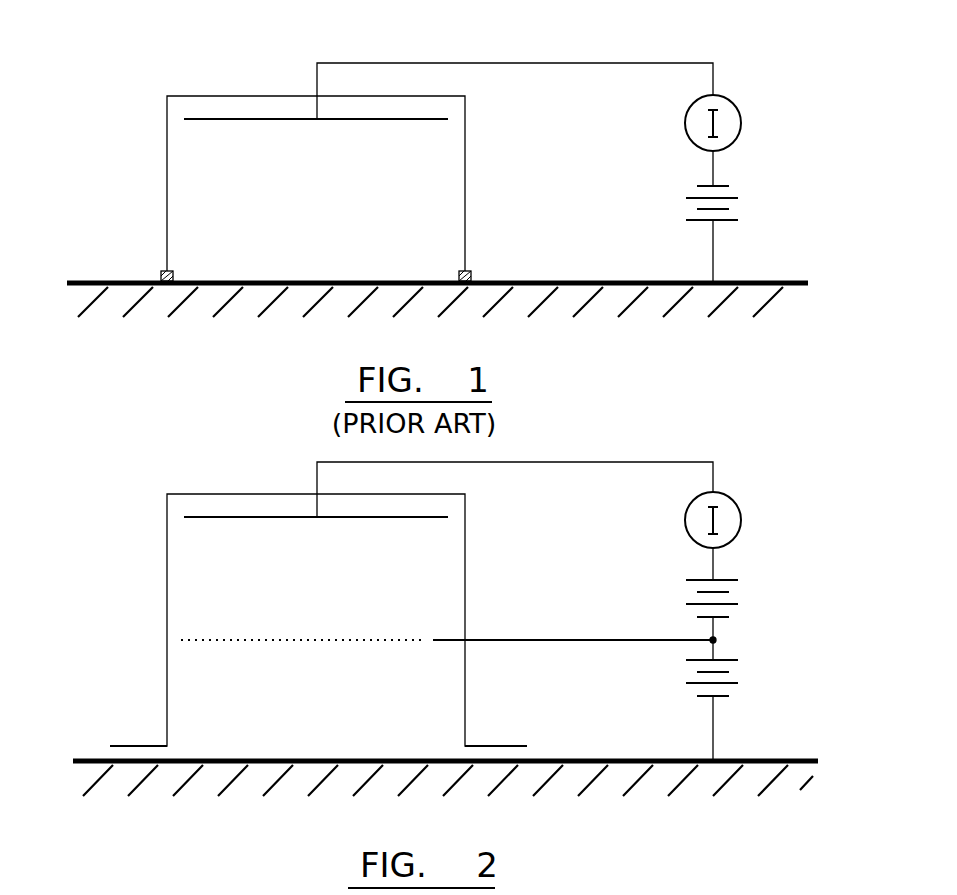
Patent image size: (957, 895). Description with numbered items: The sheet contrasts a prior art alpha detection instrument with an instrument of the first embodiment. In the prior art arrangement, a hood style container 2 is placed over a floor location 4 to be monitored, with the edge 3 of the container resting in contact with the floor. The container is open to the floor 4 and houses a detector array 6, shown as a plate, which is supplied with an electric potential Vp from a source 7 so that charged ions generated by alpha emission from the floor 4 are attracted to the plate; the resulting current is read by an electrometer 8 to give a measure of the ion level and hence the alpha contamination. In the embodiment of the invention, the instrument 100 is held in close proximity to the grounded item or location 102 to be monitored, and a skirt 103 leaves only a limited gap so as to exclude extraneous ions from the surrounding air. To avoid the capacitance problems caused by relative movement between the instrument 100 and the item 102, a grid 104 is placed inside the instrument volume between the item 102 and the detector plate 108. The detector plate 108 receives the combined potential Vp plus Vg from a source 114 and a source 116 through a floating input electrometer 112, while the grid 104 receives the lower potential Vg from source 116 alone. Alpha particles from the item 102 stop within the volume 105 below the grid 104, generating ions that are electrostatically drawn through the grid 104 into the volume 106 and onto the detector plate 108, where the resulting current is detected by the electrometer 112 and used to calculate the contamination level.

In FIG. 1, the hood style container 2 is at (167, 187).
In FIG. 1, the edge of the container 3 is at (162, 277).
In FIG. 1, the floor location 4 is at (296, 353).
In FIG. 1, the detector array 6 is at (230, 118).
In FIG. 1, the source 7 is at (752, 187).
In FIG. 1, the electrometer 8 is at (737, 105).
In FIG. 2, the instrument 100 is at (178, 483).
In FIG. 2, the location 102 is at (155, 797).
In FIG. 2, the skirt 103 is at (143, 745).
In FIG. 2, the grid 104 is at (230, 638).
In FIG. 2, the volume below the grid 105 is at (365, 709).
In FIG. 2, the volume 106 is at (368, 607).
In FIG. 2, the detector plate 108 is at (268, 517).
In FIG. 2, the floating input electrometer 112 is at (735, 502).
In FIG. 2, the source 114 is at (752, 573).
In FIG. 2, the source 116 is at (730, 708).